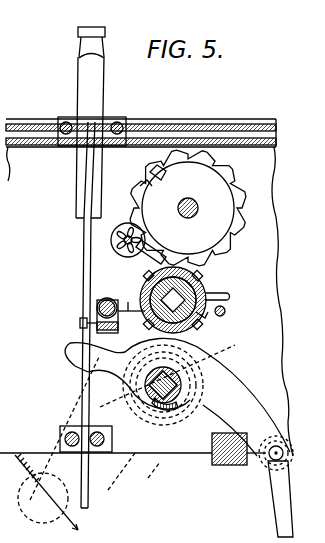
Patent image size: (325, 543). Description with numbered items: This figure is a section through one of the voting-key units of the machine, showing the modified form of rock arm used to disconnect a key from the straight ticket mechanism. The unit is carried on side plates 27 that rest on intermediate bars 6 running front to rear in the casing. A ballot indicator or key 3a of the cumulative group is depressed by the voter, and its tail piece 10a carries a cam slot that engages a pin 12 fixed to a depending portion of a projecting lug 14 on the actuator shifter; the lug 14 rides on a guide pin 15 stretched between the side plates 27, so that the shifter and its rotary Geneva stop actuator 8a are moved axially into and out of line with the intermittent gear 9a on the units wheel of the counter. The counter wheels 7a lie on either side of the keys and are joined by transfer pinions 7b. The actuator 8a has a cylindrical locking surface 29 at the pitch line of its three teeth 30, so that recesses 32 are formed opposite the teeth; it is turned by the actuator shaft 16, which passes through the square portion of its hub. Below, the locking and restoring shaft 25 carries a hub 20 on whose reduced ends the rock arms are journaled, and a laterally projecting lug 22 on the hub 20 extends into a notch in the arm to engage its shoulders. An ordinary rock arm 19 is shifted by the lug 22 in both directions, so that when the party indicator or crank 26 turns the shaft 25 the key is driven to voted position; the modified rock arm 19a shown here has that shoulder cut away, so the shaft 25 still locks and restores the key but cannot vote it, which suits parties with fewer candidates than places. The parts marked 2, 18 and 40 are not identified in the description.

The guide rail 2 is at (147, 120).
The ballot indicator or key 3a is at (95, 100).
The intermediate bar 6 is at (232, 466).
The counter wheel 7a is at (150, 172).
The transfer pinion 7b is at (124, 240).
The rotary Geneva stop actuator 8a is at (163, 256).
The intermittent gear 9a is at (140, 186).
The tail piece 10a is at (88, 484).
The pin 12 is at (80, 322).
The projecting lug 14 is at (228, 296).
The guide pin 15 is at (97, 309).
The actuator shaft 16 is at (204, 314).
The rail bar 18 is at (190, 139).
The rock arm 19 is at (238, 376).
The modified rock arm 19a is at (92, 368).
The hub 20 is at (184, 372).
The laterally projecting lug 22 is at (124, 438).
The locking and restoring shaft 25 is at (128, 392).
The party indicator or crank 26 is at (130, 480).
The side plate 27 is at (150, 478).
The cylindrical locking surface 29 is at (176, 224).
The tooth 30 is at (145, 280).
The recess 32 is at (216, 271).
The handle lever 40 is at (276, 493).